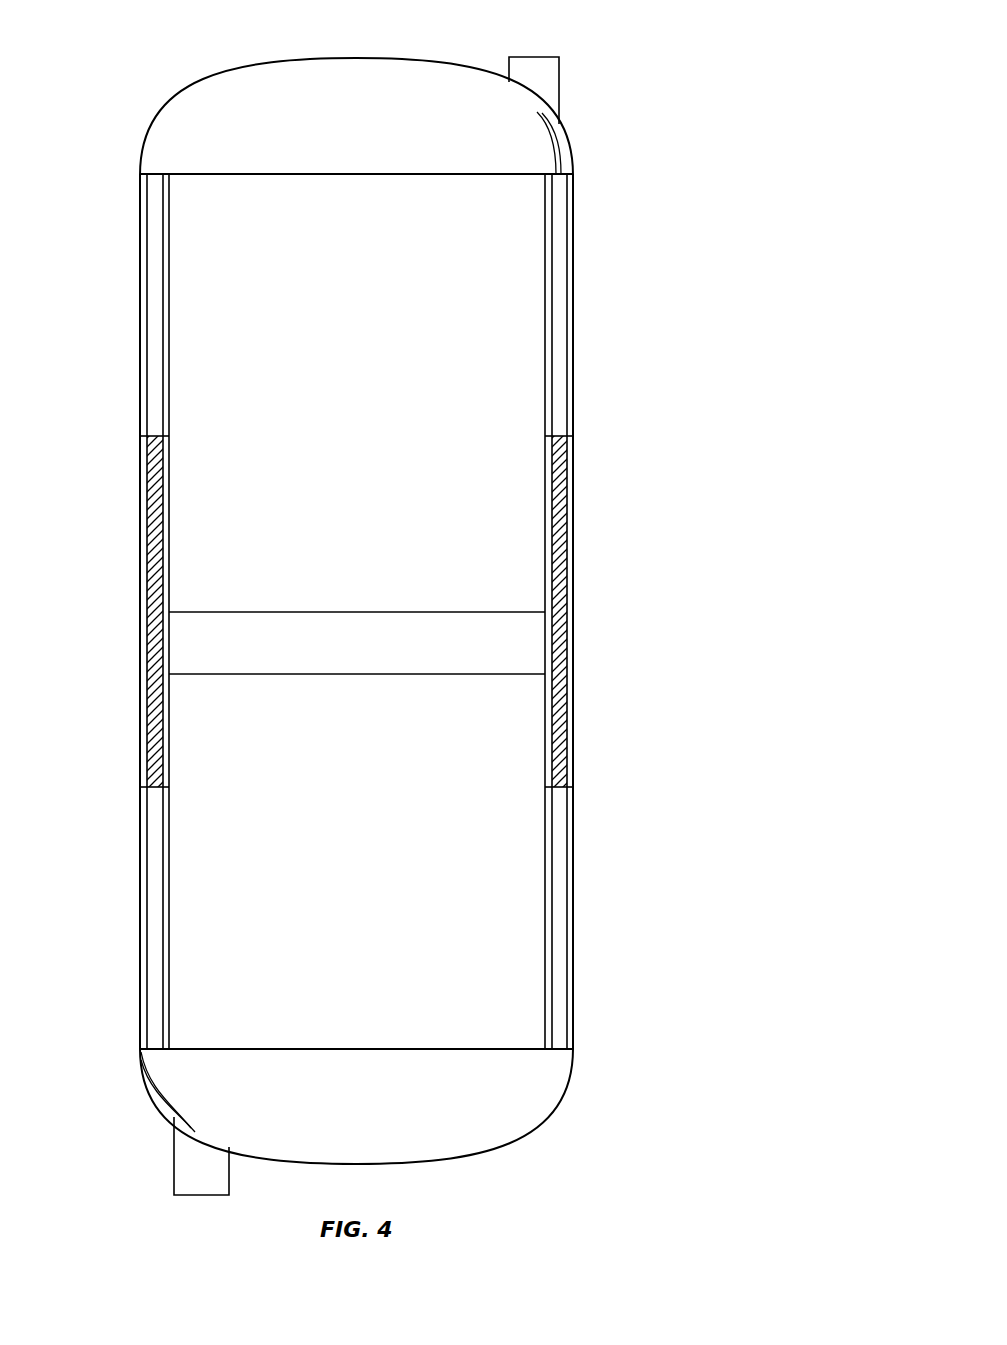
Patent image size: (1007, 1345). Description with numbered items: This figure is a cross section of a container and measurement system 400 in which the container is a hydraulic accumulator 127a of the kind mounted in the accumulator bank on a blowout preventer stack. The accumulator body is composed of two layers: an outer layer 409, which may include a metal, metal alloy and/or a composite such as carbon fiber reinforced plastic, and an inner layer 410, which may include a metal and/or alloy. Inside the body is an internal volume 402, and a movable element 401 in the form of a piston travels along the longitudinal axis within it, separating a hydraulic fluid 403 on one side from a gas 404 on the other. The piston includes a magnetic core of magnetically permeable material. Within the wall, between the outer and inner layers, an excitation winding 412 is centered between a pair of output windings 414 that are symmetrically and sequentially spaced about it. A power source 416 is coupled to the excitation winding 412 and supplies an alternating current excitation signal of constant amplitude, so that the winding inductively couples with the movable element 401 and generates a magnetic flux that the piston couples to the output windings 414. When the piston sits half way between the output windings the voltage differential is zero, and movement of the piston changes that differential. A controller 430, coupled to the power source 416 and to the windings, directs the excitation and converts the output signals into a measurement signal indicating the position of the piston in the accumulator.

The container and measurement system 400 is at (606, 78).
The hydraulic accumulator 127a is at (136, 206).
The outer layer 409 is at (573, 257).
The inner layer 410 is at (546, 327).
The output windings 414 is at (149, 378).
The excitation winding 412 is at (152, 537).
The internal volume 402 is at (545, 563).
The movable element 401 is at (376, 654).
The gas 404 is at (490, 416).
The hydraulic fluid 403 is at (490, 910).
The controller 430 is at (528, 70).
The power source 416 is at (195, 1163).